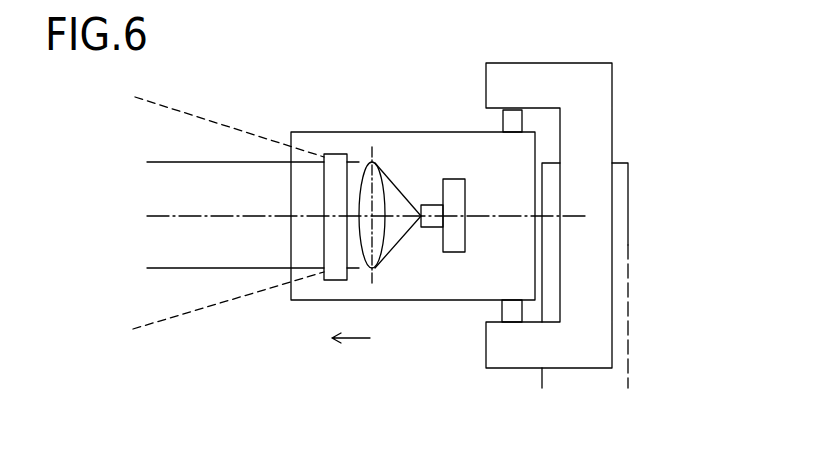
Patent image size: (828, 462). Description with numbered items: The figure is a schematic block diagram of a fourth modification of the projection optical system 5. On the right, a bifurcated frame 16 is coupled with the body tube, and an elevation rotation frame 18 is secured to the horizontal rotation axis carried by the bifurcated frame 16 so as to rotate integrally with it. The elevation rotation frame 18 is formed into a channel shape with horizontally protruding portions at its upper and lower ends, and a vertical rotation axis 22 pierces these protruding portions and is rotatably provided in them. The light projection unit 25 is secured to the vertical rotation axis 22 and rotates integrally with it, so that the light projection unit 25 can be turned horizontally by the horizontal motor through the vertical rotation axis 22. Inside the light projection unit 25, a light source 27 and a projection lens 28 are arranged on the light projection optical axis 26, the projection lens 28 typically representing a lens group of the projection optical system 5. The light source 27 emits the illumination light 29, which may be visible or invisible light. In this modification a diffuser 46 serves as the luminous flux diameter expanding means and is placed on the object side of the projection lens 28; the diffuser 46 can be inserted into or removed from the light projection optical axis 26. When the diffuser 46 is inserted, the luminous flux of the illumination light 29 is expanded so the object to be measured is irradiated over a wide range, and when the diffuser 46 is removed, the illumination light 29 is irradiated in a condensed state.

The projection optical system 5 is at (646, 248).
The bifurcated frame 16 is at (628, 327).
The elevation rotation frame 18 is at (614, 113).
The vertical rotation axis 22 is at (499, 126).
The light projection unit 25 is at (394, 132).
The light projection optical axis 26 is at (245, 217).
The light source 27 is at (467, 202).
The projection lens 28 is at (388, 243).
The illumination light 29 is at (216, 124).
The diffuser 46 is at (332, 283).